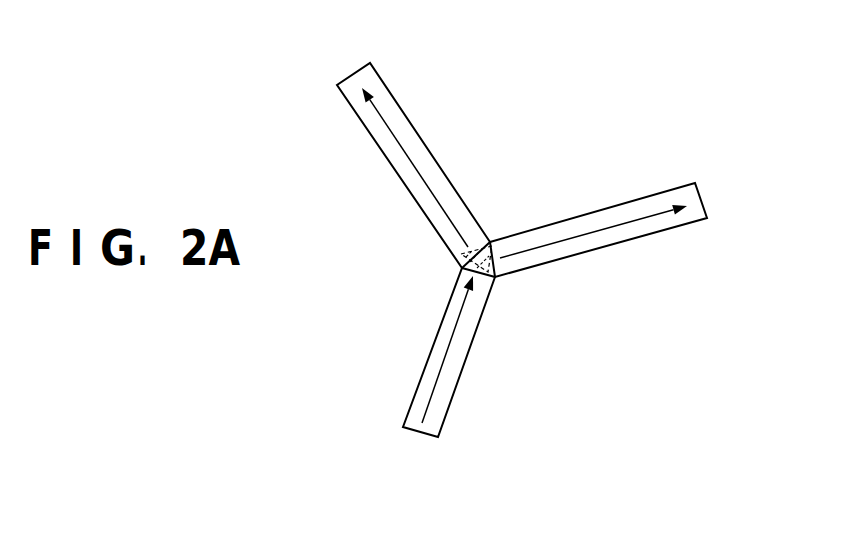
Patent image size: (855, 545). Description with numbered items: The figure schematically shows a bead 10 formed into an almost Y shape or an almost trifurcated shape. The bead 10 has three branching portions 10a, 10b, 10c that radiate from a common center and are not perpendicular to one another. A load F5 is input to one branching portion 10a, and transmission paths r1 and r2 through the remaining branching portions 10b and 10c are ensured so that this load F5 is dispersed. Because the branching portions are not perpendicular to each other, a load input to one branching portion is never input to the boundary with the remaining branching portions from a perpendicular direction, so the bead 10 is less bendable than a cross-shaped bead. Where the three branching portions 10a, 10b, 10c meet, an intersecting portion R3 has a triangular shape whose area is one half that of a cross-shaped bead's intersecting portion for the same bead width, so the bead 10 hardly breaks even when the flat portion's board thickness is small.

The bead 10 is at (554, 104).
The branching portion 10a is at (408, 432).
The branching portion 10b is at (705, 197).
The branching portion 10c is at (343, 77).
The transmission path r1 is at (597, 228).
The transmission path r2 is at (430, 183).
The intersecting portion R3 is at (457, 253).
The load F5 is at (432, 392).